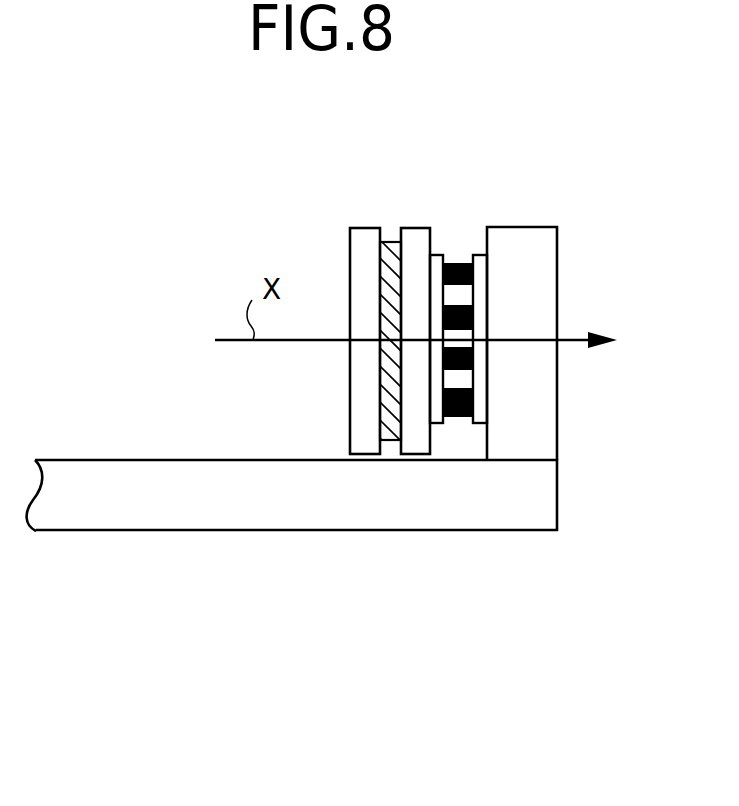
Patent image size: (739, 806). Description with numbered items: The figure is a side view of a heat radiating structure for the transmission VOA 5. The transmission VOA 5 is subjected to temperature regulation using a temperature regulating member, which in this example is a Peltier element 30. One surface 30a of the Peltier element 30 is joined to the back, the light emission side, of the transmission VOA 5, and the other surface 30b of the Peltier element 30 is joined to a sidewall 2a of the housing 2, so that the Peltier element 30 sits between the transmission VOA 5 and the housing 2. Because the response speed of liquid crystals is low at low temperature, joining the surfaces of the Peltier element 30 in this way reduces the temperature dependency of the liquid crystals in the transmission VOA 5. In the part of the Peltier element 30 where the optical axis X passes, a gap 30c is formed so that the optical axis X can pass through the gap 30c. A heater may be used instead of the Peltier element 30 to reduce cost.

The housing 2 is at (107, 510).
The sidewall of the housing 2a is at (540, 273).
The transmission VOA 5 is at (430, 211).
The Peltier element 30 is at (387, 378).
The one surface of the Peltier element 30a is at (437, 425).
The other surface of the Peltier element 30b is at (479, 425).
The gap 30c is at (459, 346).